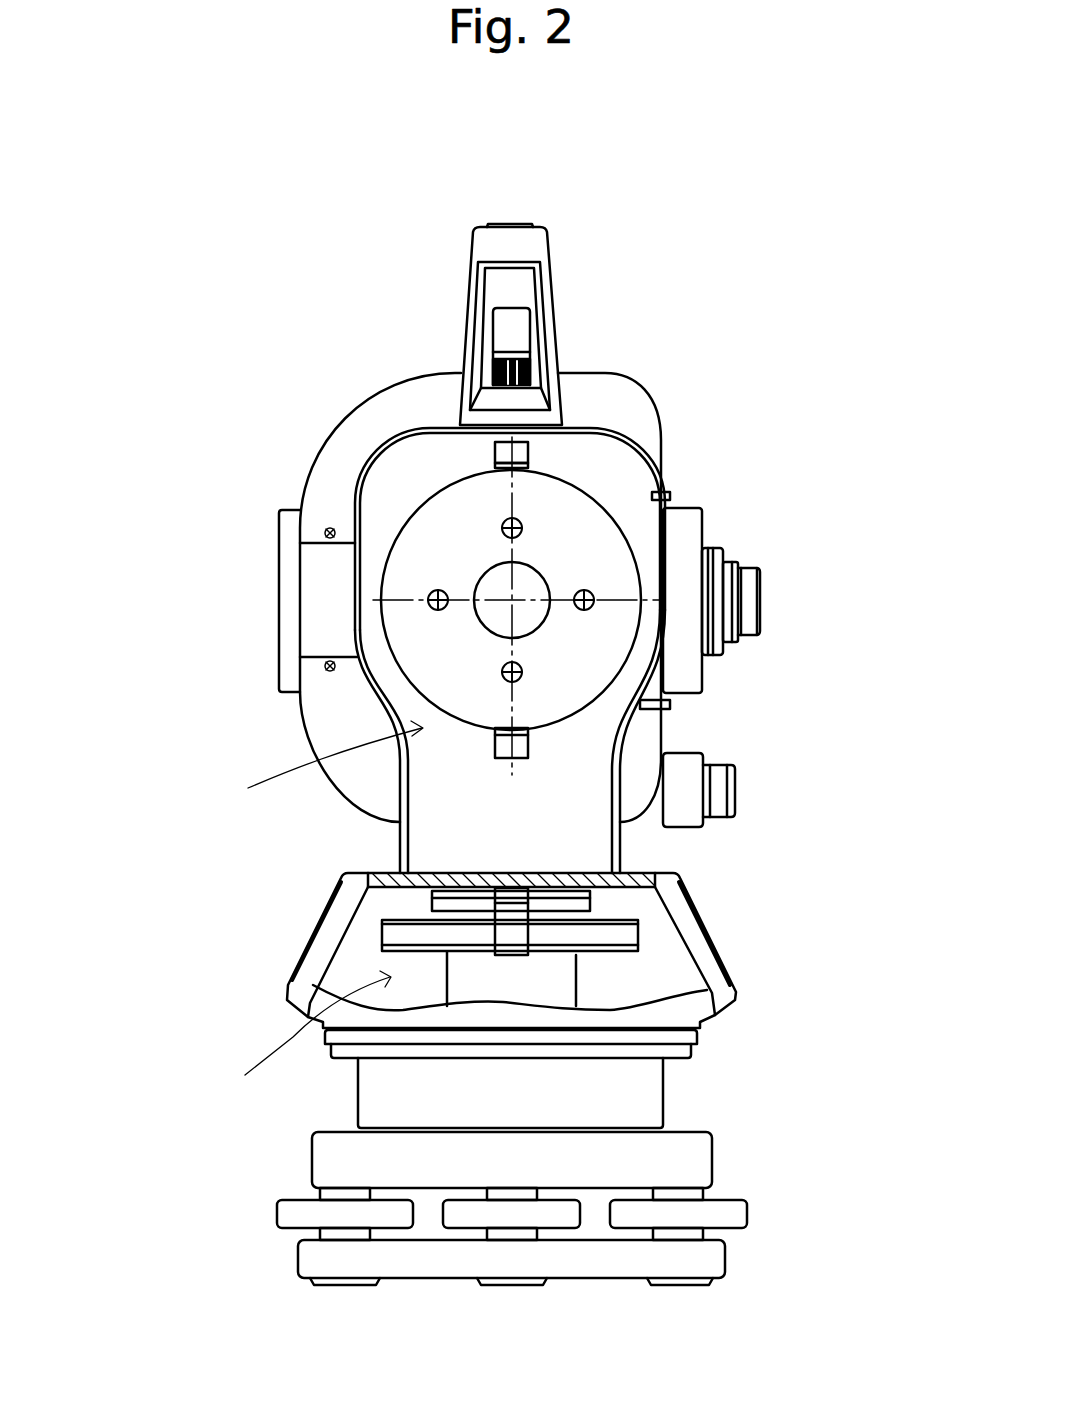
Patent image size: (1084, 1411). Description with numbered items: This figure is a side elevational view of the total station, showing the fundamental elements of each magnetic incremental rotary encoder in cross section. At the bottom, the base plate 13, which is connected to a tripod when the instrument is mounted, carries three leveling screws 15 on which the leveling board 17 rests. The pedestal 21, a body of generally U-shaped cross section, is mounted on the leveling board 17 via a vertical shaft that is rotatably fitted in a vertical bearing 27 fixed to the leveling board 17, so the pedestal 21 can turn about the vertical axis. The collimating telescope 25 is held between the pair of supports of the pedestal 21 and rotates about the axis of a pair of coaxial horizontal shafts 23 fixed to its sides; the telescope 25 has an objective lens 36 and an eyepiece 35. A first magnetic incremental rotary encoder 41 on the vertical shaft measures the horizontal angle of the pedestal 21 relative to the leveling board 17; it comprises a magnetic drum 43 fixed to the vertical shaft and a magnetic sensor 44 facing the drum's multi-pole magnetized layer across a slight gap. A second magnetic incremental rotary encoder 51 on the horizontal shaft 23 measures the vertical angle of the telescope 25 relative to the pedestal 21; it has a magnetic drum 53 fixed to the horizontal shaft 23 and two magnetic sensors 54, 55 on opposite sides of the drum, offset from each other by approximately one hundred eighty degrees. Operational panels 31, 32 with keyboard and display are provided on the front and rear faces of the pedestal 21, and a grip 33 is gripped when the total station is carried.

The base plate 13 is at (420, 1263).
The leveling screws 15 is at (290, 1213).
The leveling board 17 is at (683, 1162).
The pedestal 21 is at (622, 440).
The horizontal shafts 23 is at (532, 587).
The collimating telescope 25 is at (398, 413).
The vertical bearing 27 is at (550, 978).
The operational panel 31 is at (690, 888).
The operational panel 32 is at (322, 905).
The grip 33 is at (528, 253).
The eyepiece 35 is at (752, 608).
The objective lens 36 is at (280, 593).
The first magnetic incremental rotary encoder 41 is at (300, 1033).
The magnetic drum 43 is at (625, 938).
The magnetic sensor 44 is at (513, 942).
The second magnetic incremental rotary encoder 51 is at (316, 760).
The magnetic drum 53 is at (573, 660).
The magnetic sensor 54 is at (520, 445).
The magnetic sensor 55 is at (527, 747).